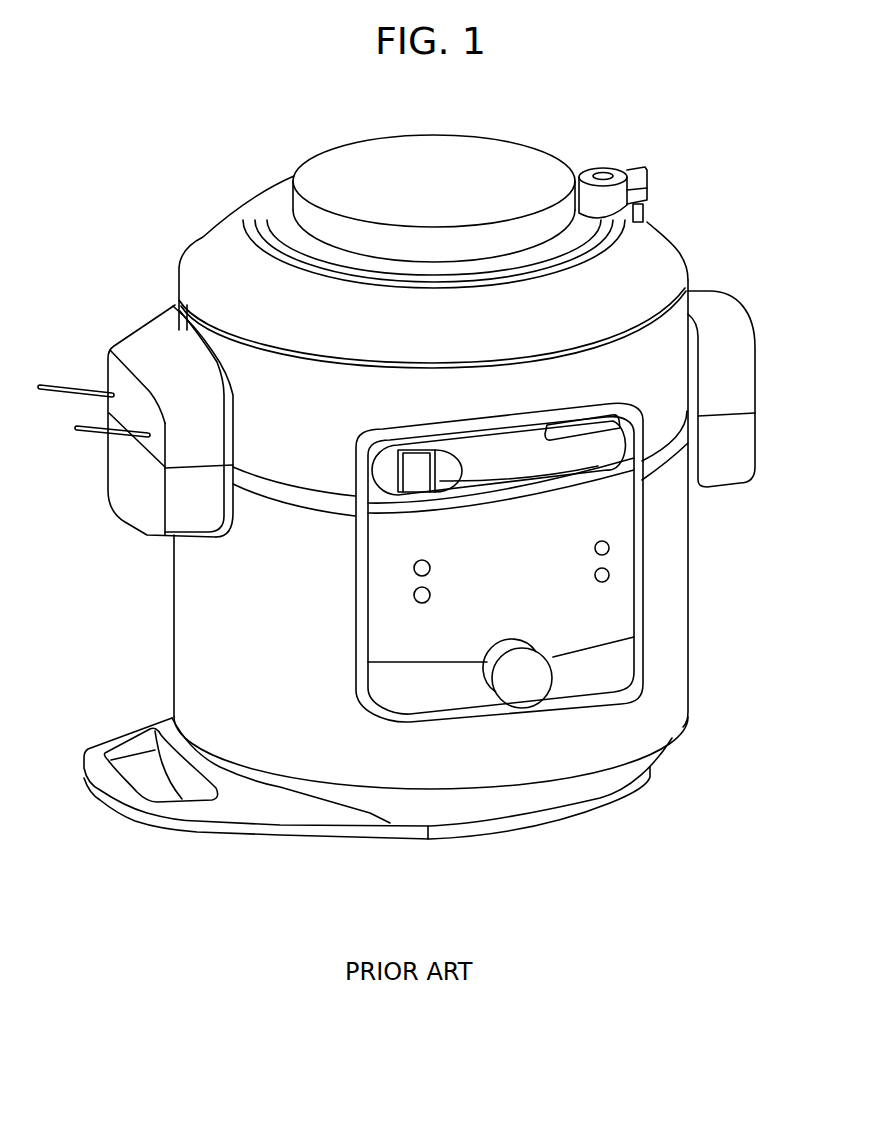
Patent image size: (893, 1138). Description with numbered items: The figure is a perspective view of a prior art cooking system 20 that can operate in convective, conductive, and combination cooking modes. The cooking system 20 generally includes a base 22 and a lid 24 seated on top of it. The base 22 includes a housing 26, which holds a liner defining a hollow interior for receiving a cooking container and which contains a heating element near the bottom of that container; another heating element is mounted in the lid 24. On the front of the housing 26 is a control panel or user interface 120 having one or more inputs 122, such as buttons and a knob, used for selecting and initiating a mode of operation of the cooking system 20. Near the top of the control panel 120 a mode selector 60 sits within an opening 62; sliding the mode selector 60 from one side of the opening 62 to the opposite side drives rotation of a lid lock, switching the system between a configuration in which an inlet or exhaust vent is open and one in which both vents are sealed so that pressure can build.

The cooking system 20 is at (177, 66).
The base 22 is at (138, 630).
The lid 24 is at (151, 253).
The housing 26 is at (173, 674).
The mode selector 60 is at (419, 462).
The opening 62 is at (536, 475).
The control panel or user interface 120 is at (532, 600).
The inputs 122 is at (413, 569).